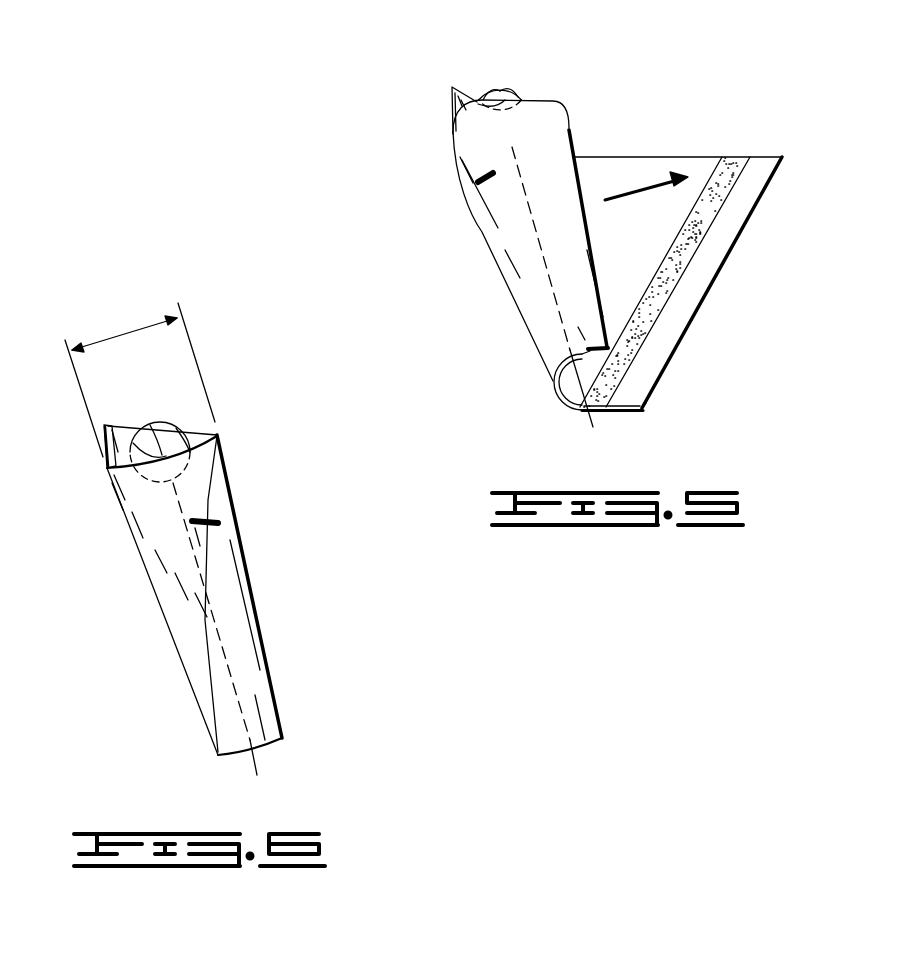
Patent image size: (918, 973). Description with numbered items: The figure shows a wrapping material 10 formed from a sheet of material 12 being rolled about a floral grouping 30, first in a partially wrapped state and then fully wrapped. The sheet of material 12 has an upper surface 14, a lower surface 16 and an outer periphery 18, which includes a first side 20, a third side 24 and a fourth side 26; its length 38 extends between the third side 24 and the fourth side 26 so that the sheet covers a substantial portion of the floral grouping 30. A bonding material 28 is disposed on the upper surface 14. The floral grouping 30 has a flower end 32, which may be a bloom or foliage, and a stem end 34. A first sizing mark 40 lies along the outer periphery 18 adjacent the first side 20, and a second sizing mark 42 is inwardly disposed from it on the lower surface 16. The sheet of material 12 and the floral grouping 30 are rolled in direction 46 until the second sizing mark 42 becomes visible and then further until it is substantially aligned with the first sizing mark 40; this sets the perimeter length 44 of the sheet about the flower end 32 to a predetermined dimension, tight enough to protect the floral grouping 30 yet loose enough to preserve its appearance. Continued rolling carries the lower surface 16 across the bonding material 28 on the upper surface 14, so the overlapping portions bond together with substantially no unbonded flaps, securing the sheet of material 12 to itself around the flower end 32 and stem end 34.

In FIG. 5, the wrapping material 10 is at (790, 155).
In FIG. 5, the sheet of material 12 is at (668, 155).
In FIG. 6, the sheet of material 12 is at (208, 675).
In FIG. 5, the upper surface 14 is at (695, 167).
In FIG. 5, the lower surface 16 is at (535, 318).
In FIG. 5, the outer periphery 18 is at (735, 245).
In FIG. 5, the first side 20 is at (710, 292).
In FIG. 6, the first side 20 is at (227, 462).
In FIG. 5, the third side 24 is at (622, 412).
In FIG. 5, the fourth side 26 is at (638, 155).
In FIG. 5, the bonding material 28 is at (620, 363).
In FIG. 5, the floral grouping 30 is at (532, 82).
In FIG. 6, the floral grouping 30 is at (184, 416).
In FIG. 5, the flower end 32 is at (488, 93).
In FIG. 6, the flower end 32 is at (150, 424).
In FIG. 5, the stem end 34 is at (582, 393).
In FIG. 6, the stem end 34 is at (260, 766).
In FIG. 6, the length 38 is at (263, 637).
In FIG. 6, the first sizing mark 40 is at (219, 519).
In FIG. 5, the second sizing mark 42 is at (480, 178).
In FIG. 6, the second sizing mark 42 is at (113, 422).
In FIG. 6, the perimeter length 44 is at (126, 341).
In FIG. 5, the direction 46 is at (613, 200).